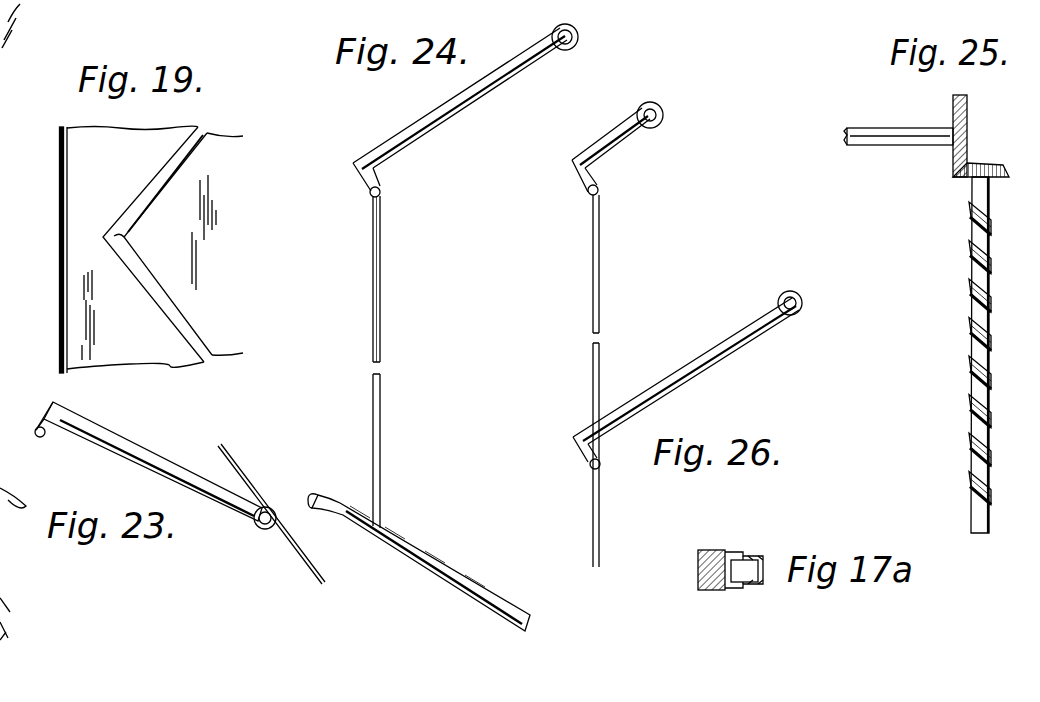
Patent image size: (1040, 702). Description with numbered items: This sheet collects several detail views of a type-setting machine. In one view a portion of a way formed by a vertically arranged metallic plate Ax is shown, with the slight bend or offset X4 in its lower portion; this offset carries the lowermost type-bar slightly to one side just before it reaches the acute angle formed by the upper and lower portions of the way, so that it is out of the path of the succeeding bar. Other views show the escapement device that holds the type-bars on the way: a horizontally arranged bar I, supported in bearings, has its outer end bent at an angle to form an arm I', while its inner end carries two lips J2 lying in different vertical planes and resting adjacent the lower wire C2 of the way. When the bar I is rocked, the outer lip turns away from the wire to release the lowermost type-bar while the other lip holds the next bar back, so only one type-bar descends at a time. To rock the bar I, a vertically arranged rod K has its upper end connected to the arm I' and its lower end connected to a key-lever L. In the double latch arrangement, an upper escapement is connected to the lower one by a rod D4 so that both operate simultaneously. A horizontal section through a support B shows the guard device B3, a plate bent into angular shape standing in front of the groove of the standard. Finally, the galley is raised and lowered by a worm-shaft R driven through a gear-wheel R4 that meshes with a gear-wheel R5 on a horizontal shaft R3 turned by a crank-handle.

In FIG. 19, the offset X4 is at (128, 238).
In FIG. 19, the metallic plate Ax is at (152, 249).
In FIG. 23, the bar I is at (149, 461).
In FIG. 24, the bar I is at (460, 98).
In FIG. 26, the bar I is at (685, 276).
In FIG. 23, the arm I' is at (51, 439).
In FIG. 24, the arm I' is at (381, 178).
In FIG. 26, the arm I' is at (585, 318).
In FIG. 23, the lips J2 is at (262, 530).
In FIG. 24, the lips J2 is at (580, 45).
In FIG. 26, the lips J2 is at (650, 100).
In FIG. 23, the lower wire C2 is at (243, 478).
In FIG. 24, the rod K is at (371, 323).
In FIG. 24, the key-lever L is at (440, 568).
In FIG. 26, the rod D4 is at (590, 357).
In FIG. 17A, the upright B is at (697, 592).
In FIG. 17A, the guard device B3 is at (757, 589).
In FIG. 25, the worm-shaft R is at (970, 332).
In FIG. 25, the horizontal shaft R3 is at (928, 154).
In FIG. 25, the gear-wheel R4 is at (1006, 155).
In FIG. 25, the gear-wheel R5 is at (968, 112).